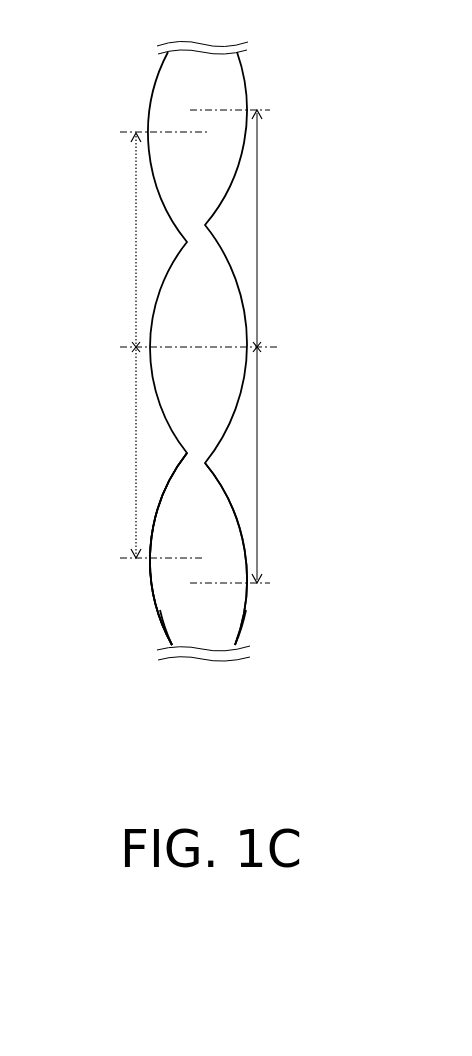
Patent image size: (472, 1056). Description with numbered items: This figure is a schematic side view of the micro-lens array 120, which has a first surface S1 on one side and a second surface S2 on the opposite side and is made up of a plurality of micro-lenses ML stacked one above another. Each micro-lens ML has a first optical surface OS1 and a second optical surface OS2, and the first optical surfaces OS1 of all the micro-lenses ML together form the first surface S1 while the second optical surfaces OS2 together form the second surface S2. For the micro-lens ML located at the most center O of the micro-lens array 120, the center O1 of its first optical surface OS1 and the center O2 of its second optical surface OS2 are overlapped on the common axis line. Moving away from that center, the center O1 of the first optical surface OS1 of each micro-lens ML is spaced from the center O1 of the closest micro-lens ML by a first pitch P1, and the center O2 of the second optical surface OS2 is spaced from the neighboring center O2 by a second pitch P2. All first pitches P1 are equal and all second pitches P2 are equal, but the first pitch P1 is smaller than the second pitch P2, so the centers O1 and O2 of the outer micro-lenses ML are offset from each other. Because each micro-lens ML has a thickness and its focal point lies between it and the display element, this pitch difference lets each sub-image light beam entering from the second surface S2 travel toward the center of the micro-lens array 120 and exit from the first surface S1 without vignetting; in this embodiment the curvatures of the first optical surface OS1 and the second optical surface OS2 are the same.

The micro-lens array 120 is at (402, 728).
The micro-lens ML is at (168, 595).
The center of the first optical surface O1 is at (148, 345).
The center of the second optical surface O2 is at (247, 347).
The most center of the micro-lens array O is at (197, 348).
The first pitch P1 is at (124, 345).
The second pitch P2 is at (271, 346).
The first surface S1 is at (127, 512).
The second surface S2 is at (268, 512).
The first optical surface OS1 is at (157, 613).
The second optical surface OS2 is at (256, 611).